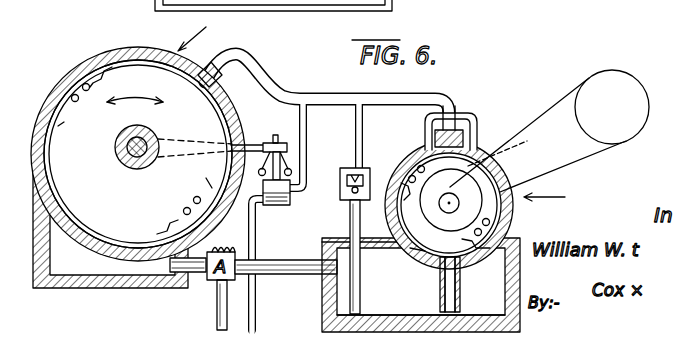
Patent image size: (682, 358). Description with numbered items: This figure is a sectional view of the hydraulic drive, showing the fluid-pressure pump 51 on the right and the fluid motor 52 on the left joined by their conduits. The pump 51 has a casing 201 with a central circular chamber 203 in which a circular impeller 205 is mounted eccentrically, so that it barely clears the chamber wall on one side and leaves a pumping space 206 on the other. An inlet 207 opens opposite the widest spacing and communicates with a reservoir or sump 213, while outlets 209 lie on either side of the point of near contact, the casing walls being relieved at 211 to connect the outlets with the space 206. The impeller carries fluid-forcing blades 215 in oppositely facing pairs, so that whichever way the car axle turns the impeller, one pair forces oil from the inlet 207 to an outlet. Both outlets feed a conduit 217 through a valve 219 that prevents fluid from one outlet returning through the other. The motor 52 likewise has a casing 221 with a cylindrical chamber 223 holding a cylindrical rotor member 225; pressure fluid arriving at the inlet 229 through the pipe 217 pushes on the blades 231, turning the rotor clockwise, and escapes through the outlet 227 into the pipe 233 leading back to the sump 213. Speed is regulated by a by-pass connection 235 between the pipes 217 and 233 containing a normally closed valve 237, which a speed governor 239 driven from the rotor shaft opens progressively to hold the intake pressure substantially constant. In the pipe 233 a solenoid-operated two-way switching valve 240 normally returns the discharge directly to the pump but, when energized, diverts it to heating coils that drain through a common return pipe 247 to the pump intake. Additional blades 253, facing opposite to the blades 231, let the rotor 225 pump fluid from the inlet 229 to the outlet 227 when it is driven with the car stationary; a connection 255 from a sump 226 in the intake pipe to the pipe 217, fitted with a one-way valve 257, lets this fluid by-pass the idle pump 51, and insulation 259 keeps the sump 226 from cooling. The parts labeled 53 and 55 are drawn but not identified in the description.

The fluid-pressure pump 51 is at (554, 196).
The fluid motor 52 is at (201, 32).
The belt 53 is at (549, 103).
The pulley 55 is at (604, 82).
The casing 201 is at (516, 215).
The central circular chamber 203 is at (503, 171).
The circular impeller 205 is at (444, 207).
The pumping space 206 is at (424, 253).
The inlet 207 is at (414, 276).
The outlets 209 is at (462, 136).
The relieved casing walls 211 is at (509, 145).
The reservoir or sump 213 is at (466, 287).
The fluid-forcing blades 215 is at (409, 173).
The fluid pressure pipe 217 is at (308, 91).
The valve 219 is at (450, 108).
The casing 221 is at (95, 64).
The cylindrical chamber 223 is at (136, 73).
The cylindrical rotor member 225 is at (138, 154).
The sump 226 is at (336, 306).
The outlet 227 is at (62, 232).
The inlet 229 is at (213, 64).
The blades 231 is at (61, 119).
The discharge pipe 233 is at (288, 259).
The by-pass connection 235 is at (307, 128).
The normally closed valve 237 is at (276, 206).
The speed governor 239 is at (273, 141).
The two-way fluid switching valve 240 is at (206, 276).
The common return pipe 247 is at (257, 291).
The blades 253 is at (96, 81).
The by-pass connection 255 is at (350, 235).
The one-way valve 257 is at (340, 175).
The insulation 259 is at (330, 324).